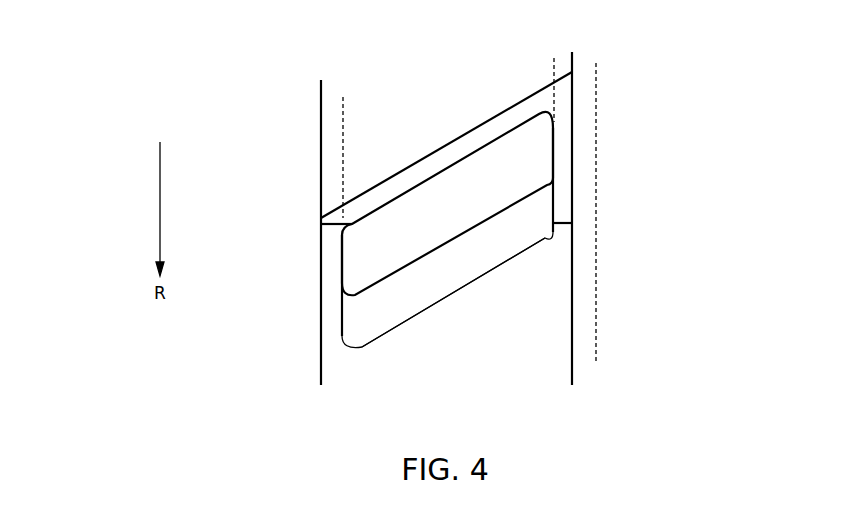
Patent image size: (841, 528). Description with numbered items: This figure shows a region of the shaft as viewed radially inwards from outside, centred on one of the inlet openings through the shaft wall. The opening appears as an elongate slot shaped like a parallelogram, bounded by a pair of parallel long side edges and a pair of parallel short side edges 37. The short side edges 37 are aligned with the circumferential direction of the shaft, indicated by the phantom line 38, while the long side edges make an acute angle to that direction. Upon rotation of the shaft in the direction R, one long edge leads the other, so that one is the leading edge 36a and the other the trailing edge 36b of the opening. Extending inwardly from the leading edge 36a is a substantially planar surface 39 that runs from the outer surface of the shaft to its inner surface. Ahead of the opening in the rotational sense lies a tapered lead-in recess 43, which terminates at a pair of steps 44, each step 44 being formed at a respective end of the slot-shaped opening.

The leading edge 36a is at (465, 290).
The trailing edge 36b is at (460, 160).
The short side edges 37 is at (338, 317).
The phantom line 38 is at (598, 95).
The opposing surface 39 is at (372, 317).
The lead-in recess 43 is at (548, 313).
The steps 44 is at (332, 230).